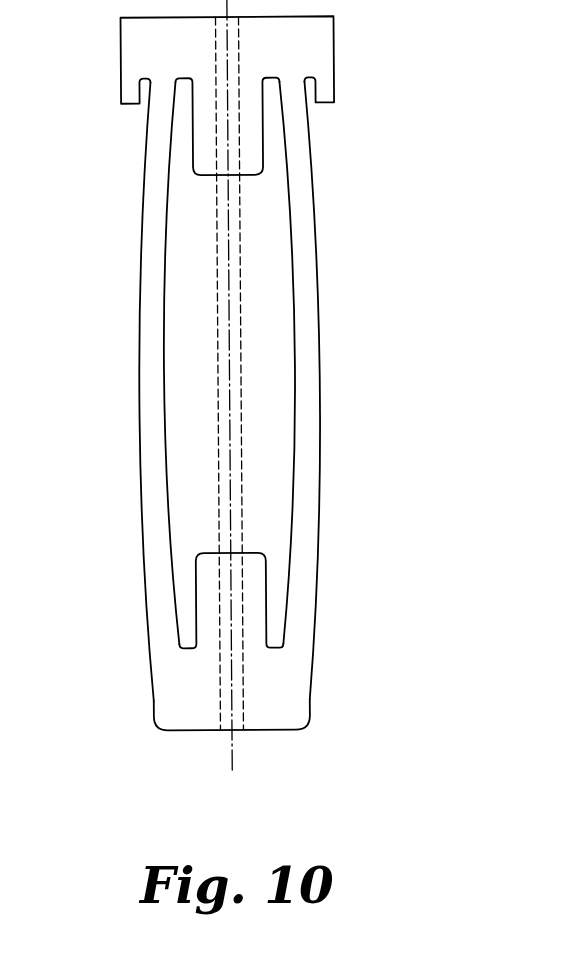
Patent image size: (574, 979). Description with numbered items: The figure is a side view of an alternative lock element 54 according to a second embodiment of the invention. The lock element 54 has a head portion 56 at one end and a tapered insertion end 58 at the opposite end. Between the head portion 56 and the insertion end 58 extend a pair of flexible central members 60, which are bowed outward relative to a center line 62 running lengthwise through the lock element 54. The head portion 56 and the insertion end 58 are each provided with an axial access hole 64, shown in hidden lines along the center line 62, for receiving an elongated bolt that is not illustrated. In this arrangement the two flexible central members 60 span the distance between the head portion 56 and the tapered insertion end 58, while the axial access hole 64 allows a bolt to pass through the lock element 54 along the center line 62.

The lock element 54 is at (263, 373).
The head portion 56 is at (333, 62).
The tapered insertion end 58 is at (310, 670).
The flexible central members 60 is at (140, 240).
The center line 62 is at (229, 307).
The axial access hole 64 is at (238, 57).